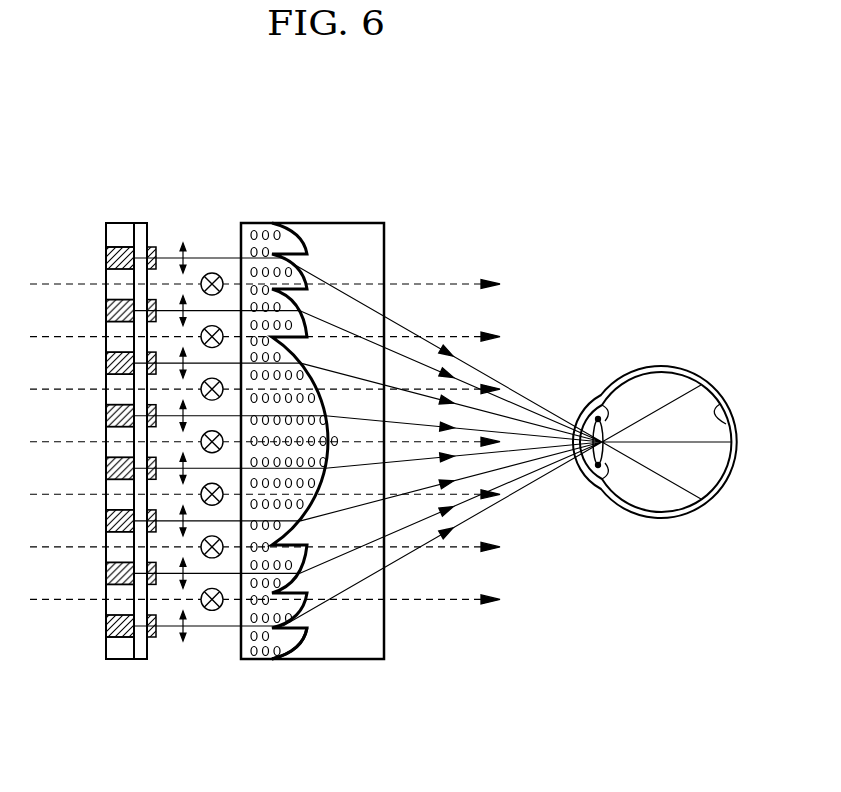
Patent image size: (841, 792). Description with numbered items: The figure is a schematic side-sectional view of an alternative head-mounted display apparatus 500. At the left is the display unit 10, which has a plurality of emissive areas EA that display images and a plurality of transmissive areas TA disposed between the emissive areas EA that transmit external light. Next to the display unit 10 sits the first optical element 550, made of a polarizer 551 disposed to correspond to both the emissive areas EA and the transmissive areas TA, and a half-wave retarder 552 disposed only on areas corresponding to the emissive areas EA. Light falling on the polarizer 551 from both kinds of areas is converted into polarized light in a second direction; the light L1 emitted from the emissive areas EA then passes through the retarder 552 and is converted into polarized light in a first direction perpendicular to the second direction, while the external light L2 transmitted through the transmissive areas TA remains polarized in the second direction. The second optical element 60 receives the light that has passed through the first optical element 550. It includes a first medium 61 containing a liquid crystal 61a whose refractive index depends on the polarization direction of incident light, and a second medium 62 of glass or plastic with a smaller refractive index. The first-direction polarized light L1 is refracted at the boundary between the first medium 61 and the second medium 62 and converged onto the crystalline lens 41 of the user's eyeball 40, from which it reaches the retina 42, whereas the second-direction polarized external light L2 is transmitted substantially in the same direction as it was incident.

The head-mounted display apparatus 500 is at (527, 164).
The display unit 10 is at (113, 224).
The transmissive areas TA is at (112, 238).
The emissive areas EA is at (108, 258).
The first optical element 550 is at (210, 178).
The polarizer 551 is at (140, 228).
The λ/2 retarder 552 is at (157, 247).
The light emitted from the emissive areas L1 is at (205, 629).
The external light L2 is at (63, 598).
The second optical element 60 is at (362, 209).
The first medium 61 is at (297, 648).
The liquid crystal 61a is at (282, 228).
The second medium 62 is at (337, 228).
The user's eyeball 40 is at (683, 362).
The crystalline lens 41 is at (598, 416).
The retina 42 is at (722, 402).